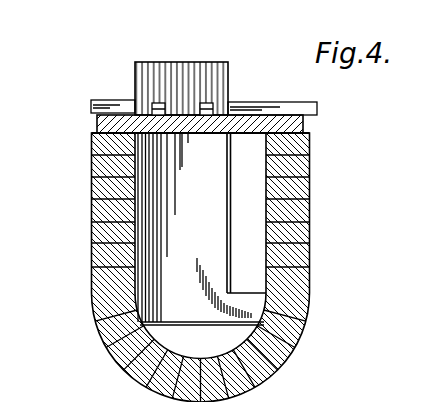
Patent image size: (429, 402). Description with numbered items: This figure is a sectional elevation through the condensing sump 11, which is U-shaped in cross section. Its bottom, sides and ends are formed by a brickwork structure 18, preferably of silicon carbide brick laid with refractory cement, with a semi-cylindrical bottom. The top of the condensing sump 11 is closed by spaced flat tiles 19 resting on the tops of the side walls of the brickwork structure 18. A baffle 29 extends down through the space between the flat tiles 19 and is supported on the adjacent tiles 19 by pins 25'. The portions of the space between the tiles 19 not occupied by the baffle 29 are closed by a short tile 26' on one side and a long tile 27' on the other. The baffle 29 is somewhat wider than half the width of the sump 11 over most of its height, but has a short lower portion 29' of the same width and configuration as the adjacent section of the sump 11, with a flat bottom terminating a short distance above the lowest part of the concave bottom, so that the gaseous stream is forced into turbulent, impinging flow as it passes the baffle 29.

The condensing sump 11 is at (246, 213).
The brickwork structure 18 is at (288, 238).
The flat tiles 19 is at (97, 125).
The pins 25' is at (181, 76).
The short tiles 26' is at (103, 84).
The long tiles 27' is at (272, 89).
The baffles 29 is at (150, 229).
The lower portion of baffle 29' is at (287, 288).